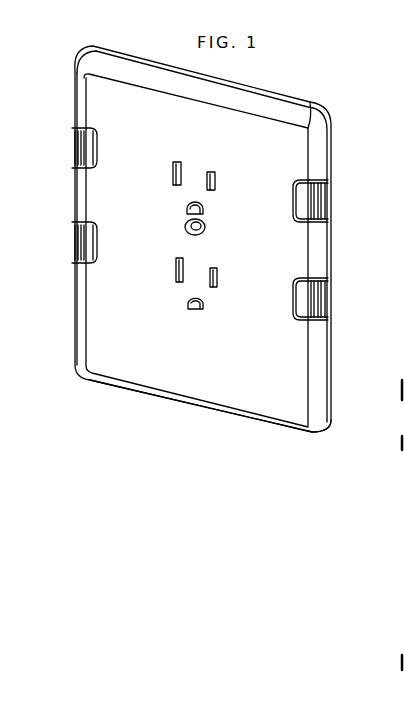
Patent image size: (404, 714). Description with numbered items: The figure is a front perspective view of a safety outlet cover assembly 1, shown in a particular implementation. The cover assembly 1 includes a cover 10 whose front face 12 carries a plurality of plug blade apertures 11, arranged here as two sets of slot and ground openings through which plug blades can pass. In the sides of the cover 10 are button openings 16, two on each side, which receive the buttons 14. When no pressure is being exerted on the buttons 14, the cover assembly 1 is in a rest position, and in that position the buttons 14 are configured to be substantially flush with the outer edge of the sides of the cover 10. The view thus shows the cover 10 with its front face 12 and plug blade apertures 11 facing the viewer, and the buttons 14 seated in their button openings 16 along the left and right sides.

The safety outlet cover assembly 1 is at (307, 79).
The cover 10 is at (97, 378).
The plug blade apertures 11 is at (177, 272).
The front face 12 is at (286, 408).
The buttons 14 is at (78, 147).
The button openings 16 is at (73, 162).